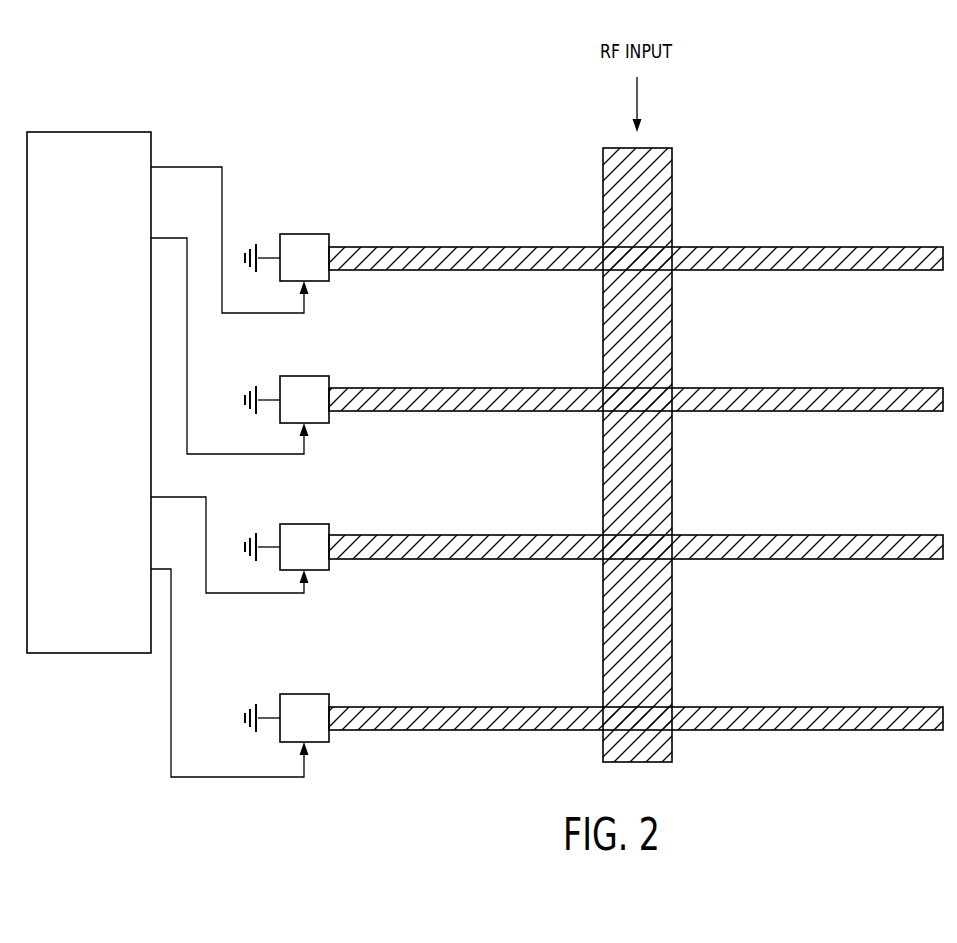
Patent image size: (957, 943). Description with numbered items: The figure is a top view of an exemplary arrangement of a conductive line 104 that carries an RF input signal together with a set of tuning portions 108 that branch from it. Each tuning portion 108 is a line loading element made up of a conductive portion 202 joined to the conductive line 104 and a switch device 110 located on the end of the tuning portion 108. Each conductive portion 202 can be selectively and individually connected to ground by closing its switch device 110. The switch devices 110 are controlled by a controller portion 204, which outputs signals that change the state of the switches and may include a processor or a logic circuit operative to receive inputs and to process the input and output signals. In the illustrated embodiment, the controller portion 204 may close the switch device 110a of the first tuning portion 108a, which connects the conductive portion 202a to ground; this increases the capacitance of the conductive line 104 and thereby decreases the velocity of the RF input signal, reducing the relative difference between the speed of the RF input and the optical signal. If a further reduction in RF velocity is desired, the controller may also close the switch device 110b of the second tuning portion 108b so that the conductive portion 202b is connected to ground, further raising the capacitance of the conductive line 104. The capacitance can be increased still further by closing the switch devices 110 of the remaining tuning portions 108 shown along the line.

The conductive line 104 is at (663, 167).
The controller portion 204 is at (88, 132).
The tuning portion 108a is at (594, 215).
The tuning portion 108b is at (594, 359).
The tuning portion 108 is at (594, 592).
The switch device 110a is at (305, 244).
The switch device 110b is at (305, 386).
The switch device 110 is at (305, 533).
The conductive portion 202a is at (532, 253).
The conductive portion 202b is at (532, 396).
The conductive portion 202 is at (532, 543).